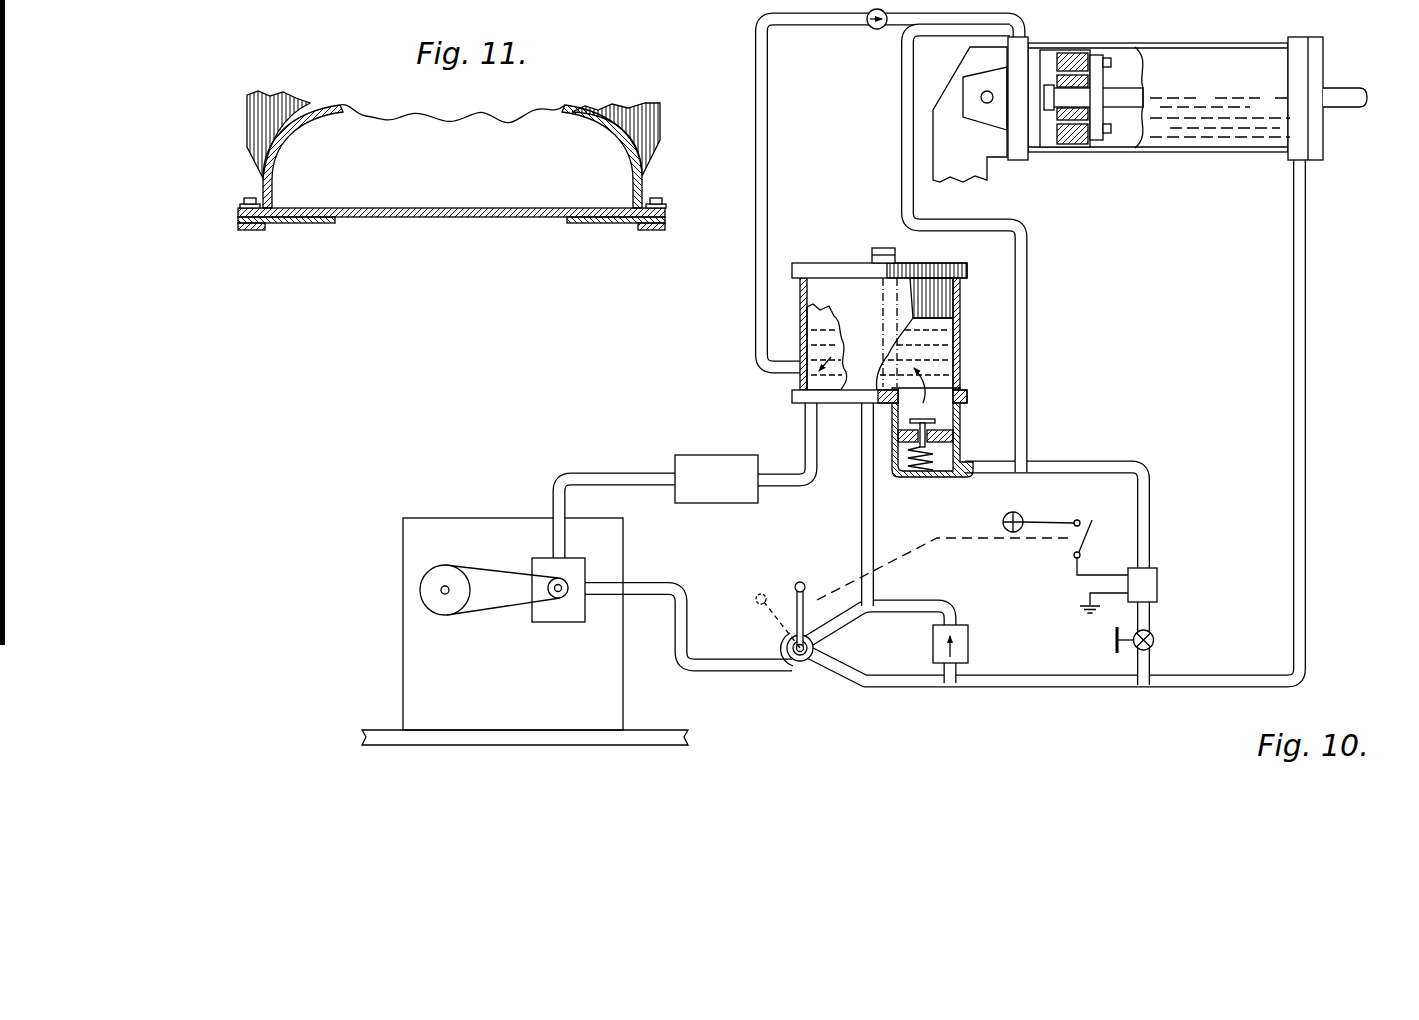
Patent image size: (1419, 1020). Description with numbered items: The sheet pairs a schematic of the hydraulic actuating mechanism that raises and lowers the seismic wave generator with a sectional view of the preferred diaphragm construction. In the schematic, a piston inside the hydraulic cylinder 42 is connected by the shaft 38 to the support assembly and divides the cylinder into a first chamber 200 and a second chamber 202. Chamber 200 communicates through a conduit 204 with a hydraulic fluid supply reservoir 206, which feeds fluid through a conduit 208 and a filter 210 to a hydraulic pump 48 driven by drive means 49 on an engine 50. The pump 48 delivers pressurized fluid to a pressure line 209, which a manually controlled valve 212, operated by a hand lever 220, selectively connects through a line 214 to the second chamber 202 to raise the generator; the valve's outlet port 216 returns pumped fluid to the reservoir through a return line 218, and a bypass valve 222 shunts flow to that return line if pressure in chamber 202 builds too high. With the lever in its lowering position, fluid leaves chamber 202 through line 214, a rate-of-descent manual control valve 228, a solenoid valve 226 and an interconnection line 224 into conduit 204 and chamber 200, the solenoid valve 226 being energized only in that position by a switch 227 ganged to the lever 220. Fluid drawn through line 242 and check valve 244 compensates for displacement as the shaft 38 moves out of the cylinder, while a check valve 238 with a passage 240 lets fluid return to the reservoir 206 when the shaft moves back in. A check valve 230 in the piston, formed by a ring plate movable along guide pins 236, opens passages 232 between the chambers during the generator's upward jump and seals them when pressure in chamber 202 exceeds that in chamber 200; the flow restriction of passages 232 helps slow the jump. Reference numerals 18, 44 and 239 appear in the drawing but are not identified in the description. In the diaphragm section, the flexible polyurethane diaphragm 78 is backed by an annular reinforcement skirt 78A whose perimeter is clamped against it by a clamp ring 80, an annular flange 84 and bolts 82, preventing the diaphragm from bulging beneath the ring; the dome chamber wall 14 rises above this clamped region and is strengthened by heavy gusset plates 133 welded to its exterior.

In FIG. 11, the dome chamber wall 14 is at (307, 110).
In FIG. 11, the diaphragm top surface 18 is at (500, 173).
In FIG. 11, the diaphragm 78 is at (492, 217).
In FIG. 11, the annular reinforcement skirt 78A is at (315, 223).
In FIG. 11, the clamp ring 80 is at (252, 230).
In FIG. 11, the bolts 82 is at (252, 199).
In FIG. 11, the annular flange 84 is at (238, 207).
In FIG. 11, the gusset plates 133 is at (246, 112).
In FIG. 10, the shaft 38 is at (1343, 88).
In FIG. 10, the hydraulic cylinder 42 is at (1243, 150).
In FIG. 10, the mounting bracket 44 is at (985, 103).
In FIG. 10, the hydraulic pump 48 is at (575, 617).
In FIG. 10, the drive means 49 is at (438, 603).
In FIG. 10, the engine 50 is at (462, 517).
In FIG. 10, the first chamber 200 is at (1050, 60).
In FIG. 10, the second chamber 202 is at (1123, 57).
In FIG. 10, the conduit 204 is at (1027, 275).
In FIG. 10, the hydraulic fluid supply reservoir 206 is at (802, 322).
In FIG. 10, the conduit 208 is at (805, 430).
In FIG. 10, the pressure line 209 is at (715, 673).
In FIG. 10, the filter 210 is at (712, 455).
In FIG. 10, the control valve 212 is at (810, 663).
In FIG. 10, the line 214 is at (1307, 482).
In FIG. 10, the outlet port 216 is at (840, 628).
In FIG. 10, the return line 218 is at (875, 505).
In FIG. 10, the hand lever 220 is at (847, 520).
In FIG. 10, the bypass valve 222 is at (965, 728).
In FIG. 10, the interconnection line 224 is at (1102, 460).
In FIG. 10, the solenoid valve 226 is at (1157, 587).
In FIG. 10, the switch 227 is at (1095, 527).
In FIG. 10, the rate-of-descent manual control valve 228 is at (1116, 644).
In FIG. 10, the check valve 230 is at (1100, 148).
In FIG. 10, the passages 232 is at (1055, 148).
In FIG. 10, the guide pins 236 is at (1111, 127).
In FIG. 10, the check valve 238 is at (953, 423).
In FIG. 10, the electrical connection 239 is at (987, 538).
In FIG. 10, the passage 240 is at (952, 437).
In FIG. 10, the line 242 is at (768, 205).
In FIG. 10, the check valve 244 is at (877, 29).